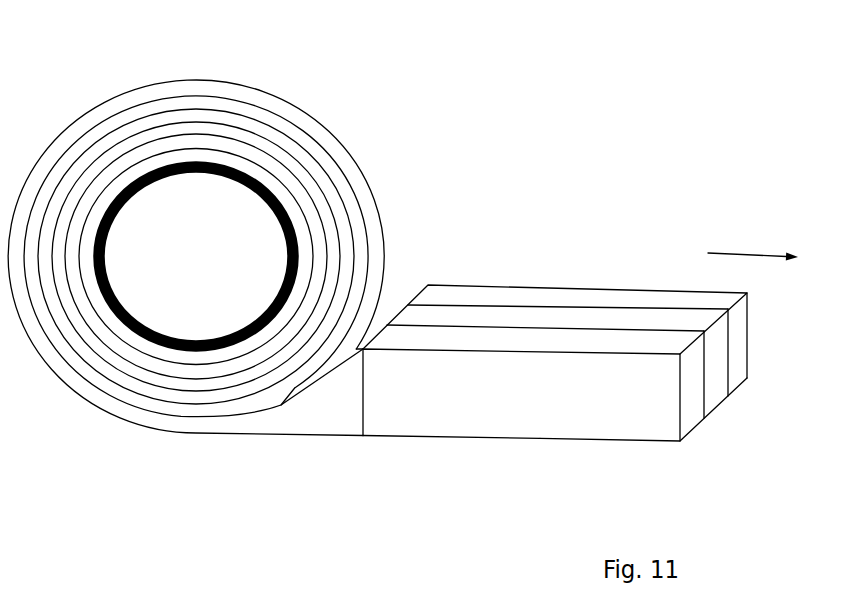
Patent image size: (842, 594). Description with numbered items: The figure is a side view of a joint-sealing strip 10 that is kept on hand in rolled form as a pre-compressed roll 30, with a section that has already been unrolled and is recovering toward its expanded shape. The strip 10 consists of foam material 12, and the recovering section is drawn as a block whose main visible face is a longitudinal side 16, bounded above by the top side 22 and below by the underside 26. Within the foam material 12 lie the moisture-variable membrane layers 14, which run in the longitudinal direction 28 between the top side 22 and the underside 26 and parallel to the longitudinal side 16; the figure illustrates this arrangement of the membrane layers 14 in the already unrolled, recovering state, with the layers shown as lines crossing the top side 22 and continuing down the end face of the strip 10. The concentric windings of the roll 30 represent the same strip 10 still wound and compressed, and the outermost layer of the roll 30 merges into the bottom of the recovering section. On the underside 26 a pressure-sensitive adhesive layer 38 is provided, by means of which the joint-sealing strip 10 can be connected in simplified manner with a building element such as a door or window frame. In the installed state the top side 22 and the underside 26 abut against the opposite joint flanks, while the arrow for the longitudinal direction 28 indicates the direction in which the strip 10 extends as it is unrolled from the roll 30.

The joint-sealing strip 10 is at (513, 263).
The foam material 12 is at (228, 92).
The moisture-variable membrane layers 14 is at (605, 307).
The longitudinal side 16 is at (579, 412).
The top side 22 is at (542, 280).
The underside 26 is at (647, 454).
The longitudinal direction 28 is at (747, 253).
The roll 30 is at (63, 90).
The pressure-sensitive adhesive layer 38 is at (442, 438).